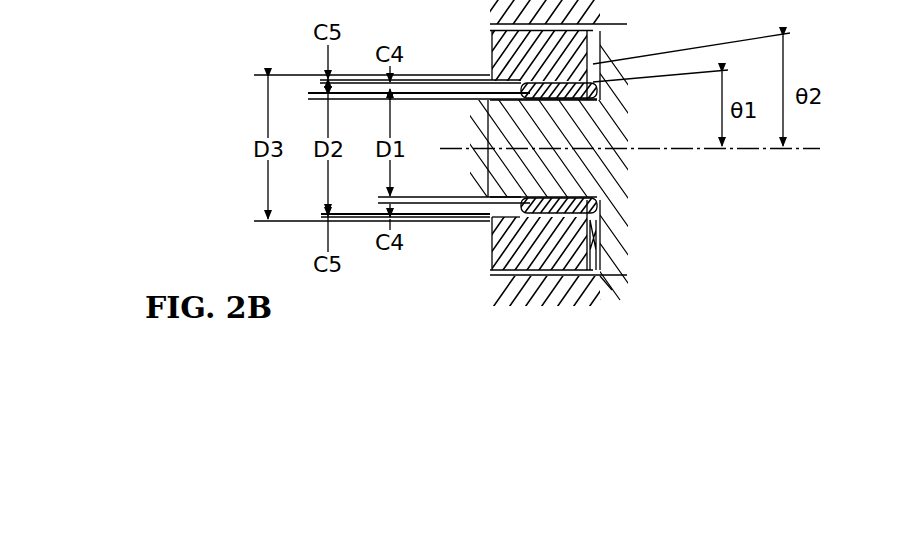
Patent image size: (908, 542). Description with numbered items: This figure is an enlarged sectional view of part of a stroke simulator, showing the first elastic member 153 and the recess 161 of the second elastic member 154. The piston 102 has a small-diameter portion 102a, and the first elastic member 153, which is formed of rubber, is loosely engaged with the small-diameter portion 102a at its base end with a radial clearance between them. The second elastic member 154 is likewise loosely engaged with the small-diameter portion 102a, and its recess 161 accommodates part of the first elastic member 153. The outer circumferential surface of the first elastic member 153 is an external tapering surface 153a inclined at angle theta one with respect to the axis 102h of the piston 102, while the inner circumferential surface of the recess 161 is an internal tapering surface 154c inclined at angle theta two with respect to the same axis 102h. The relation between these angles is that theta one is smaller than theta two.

The piston 102 is at (622, 181).
The small-diameter portion 102a is at (517, 167).
The axis of the piston 102h is at (819, 153).
The first elastic member 153 is at (603, 240).
The external tapering surface 153a is at (603, 282).
The second elastic member 154 is at (492, 50).
The internal tapering surface 154c is at (500, 269).
The recess 161 is at (566, 66).